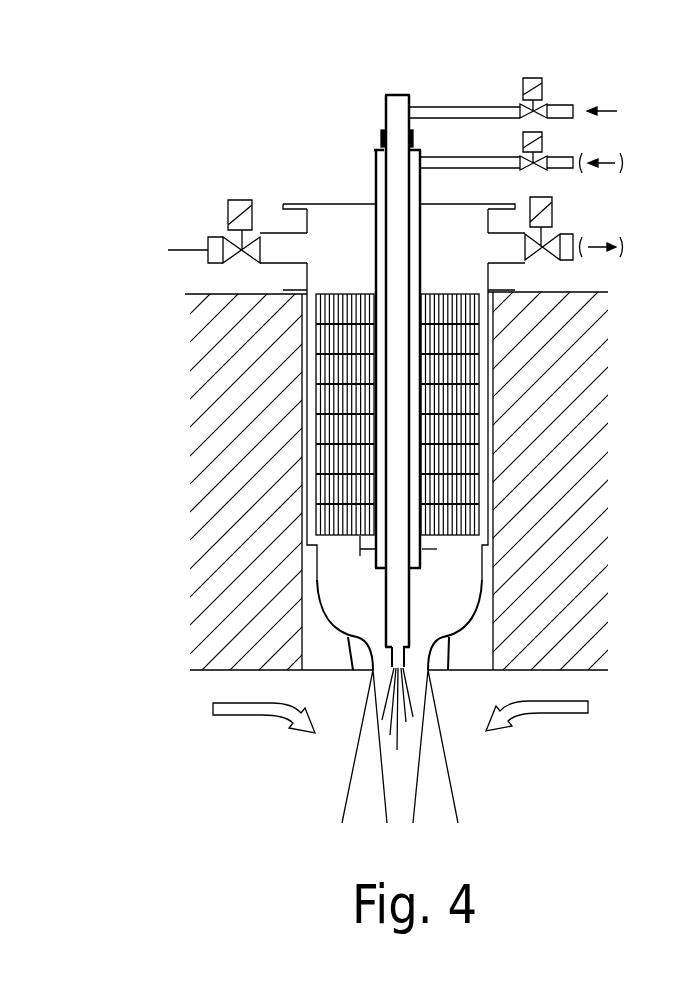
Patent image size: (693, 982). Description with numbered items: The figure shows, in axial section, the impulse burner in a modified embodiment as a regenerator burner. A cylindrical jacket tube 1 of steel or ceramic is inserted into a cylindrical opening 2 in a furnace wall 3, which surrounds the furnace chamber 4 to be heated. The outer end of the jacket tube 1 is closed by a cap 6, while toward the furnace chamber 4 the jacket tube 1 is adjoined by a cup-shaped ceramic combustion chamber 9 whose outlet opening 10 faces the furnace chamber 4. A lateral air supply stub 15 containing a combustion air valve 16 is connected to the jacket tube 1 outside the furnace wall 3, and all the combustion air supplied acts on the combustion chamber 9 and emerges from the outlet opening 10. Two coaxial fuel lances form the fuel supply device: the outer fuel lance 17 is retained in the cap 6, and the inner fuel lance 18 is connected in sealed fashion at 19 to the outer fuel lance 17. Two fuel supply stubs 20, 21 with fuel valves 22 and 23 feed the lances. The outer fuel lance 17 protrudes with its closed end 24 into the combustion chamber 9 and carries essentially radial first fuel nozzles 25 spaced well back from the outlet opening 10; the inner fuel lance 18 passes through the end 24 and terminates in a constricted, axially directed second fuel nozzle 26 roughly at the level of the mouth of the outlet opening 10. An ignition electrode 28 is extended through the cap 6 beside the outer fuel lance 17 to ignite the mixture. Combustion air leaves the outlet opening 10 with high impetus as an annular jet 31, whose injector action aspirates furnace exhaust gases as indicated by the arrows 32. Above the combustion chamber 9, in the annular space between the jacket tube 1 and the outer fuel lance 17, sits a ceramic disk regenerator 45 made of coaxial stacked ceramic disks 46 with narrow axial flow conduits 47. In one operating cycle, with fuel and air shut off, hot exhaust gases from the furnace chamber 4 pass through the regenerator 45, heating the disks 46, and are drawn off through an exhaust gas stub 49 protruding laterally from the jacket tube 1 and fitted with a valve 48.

The jacket tube 1 is at (309, 273).
The opening 2 is at (322, 649).
The furnace wall 3 is at (575, 458).
The furnace chamber 4 is at (300, 442).
The cap 6 is at (337, 204).
The combustion chamber 9 is at (340, 632).
The outlet opening 10 is at (380, 660).
The air supply stub 15 is at (273, 258).
The combustion air valve 16 is at (238, 240).
The outer fuel lance 17 is at (422, 260).
The inner fuel lance 18 is at (396, 112).
The sealed connection 19 is at (382, 138).
The fuel supply stub 20 is at (457, 158).
The fuel supply stub 21 is at (458, 107).
The fuel valve 22 is at (545, 157).
The fuel valve 23 is at (545, 104).
The end of outer fuel lance 24 is at (417, 571).
The first fuel nozzles 25 is at (424, 552).
The second fuel nozzle 26 is at (397, 722).
The ignition electrode 28 is at (358, 551).
The annular jet 31 is at (435, 803).
The arrows 32 is at (245, 708).
The ceramic disk regenerator 45 is at (488, 405).
The ceramic disks 46 is at (480, 515).
The axial flow conduits 47 is at (347, 294).
The valve 48 is at (552, 206).
The exhaust gas stub 49 is at (513, 253).